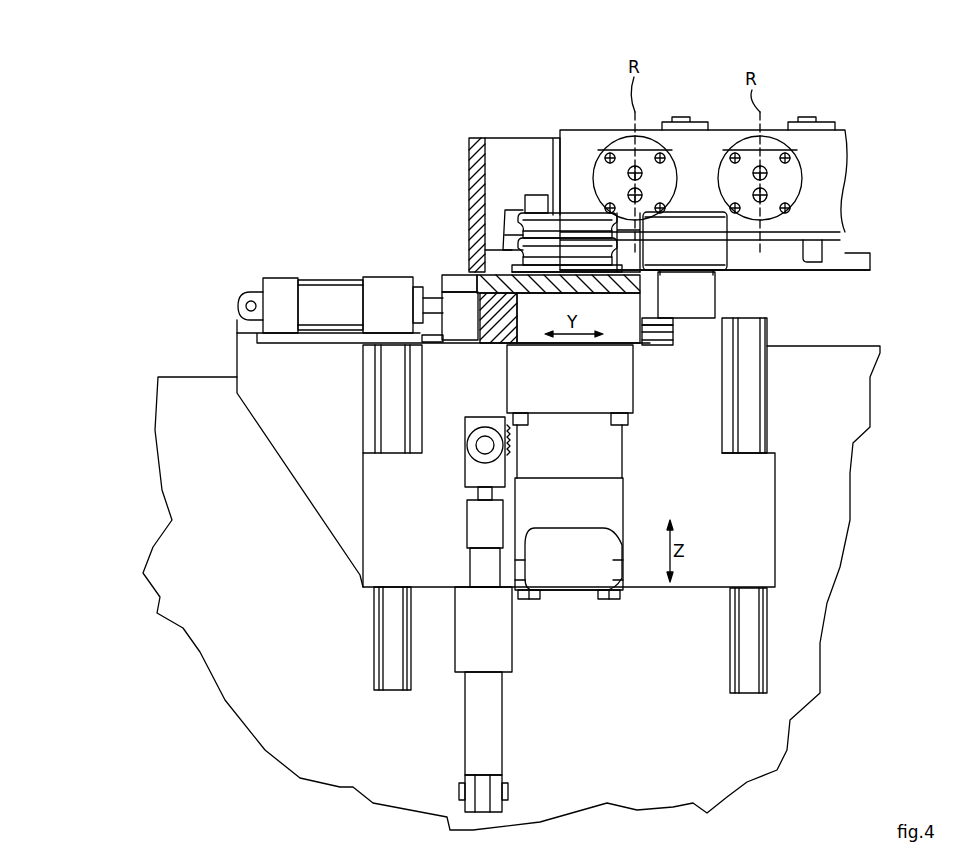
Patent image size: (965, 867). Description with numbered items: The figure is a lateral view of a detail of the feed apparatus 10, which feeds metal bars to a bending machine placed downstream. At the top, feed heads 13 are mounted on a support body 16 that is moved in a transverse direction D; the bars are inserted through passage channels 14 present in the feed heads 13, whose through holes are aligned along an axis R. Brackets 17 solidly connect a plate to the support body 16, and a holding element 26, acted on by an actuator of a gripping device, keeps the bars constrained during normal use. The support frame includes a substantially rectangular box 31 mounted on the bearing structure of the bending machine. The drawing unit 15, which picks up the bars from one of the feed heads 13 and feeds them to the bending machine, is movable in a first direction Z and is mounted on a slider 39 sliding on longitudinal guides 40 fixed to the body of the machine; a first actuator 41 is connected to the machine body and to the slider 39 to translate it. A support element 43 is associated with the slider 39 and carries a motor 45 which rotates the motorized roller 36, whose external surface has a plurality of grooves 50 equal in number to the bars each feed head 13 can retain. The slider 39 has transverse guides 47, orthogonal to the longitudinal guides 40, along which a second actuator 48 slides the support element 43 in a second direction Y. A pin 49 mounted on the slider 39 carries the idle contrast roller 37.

The feed apparatus 10 is at (830, 95).
The feed heads 13 is at (646, 165).
The passage channels 14 is at (630, 195).
The drawing unit 15 is at (633, 395).
The support body 16 is at (837, 140).
The brackets 17 is at (479, 226).
The holding element 26 is at (812, 250).
The box 31 is at (857, 263).
The motorized roller 36 is at (572, 212).
The idle contrast roller 37 is at (690, 232).
The slider 39 is at (373, 576).
The longitudinal guides 40 is at (393, 678).
The first actuator 41 is at (490, 718).
The support element 43 is at (487, 332).
The motor 45 is at (615, 502).
The transverse guides 47 is at (430, 340).
The second actuator 48 is at (330, 290).
The pin 49 is at (698, 303).
The grooves 50 is at (535, 253).